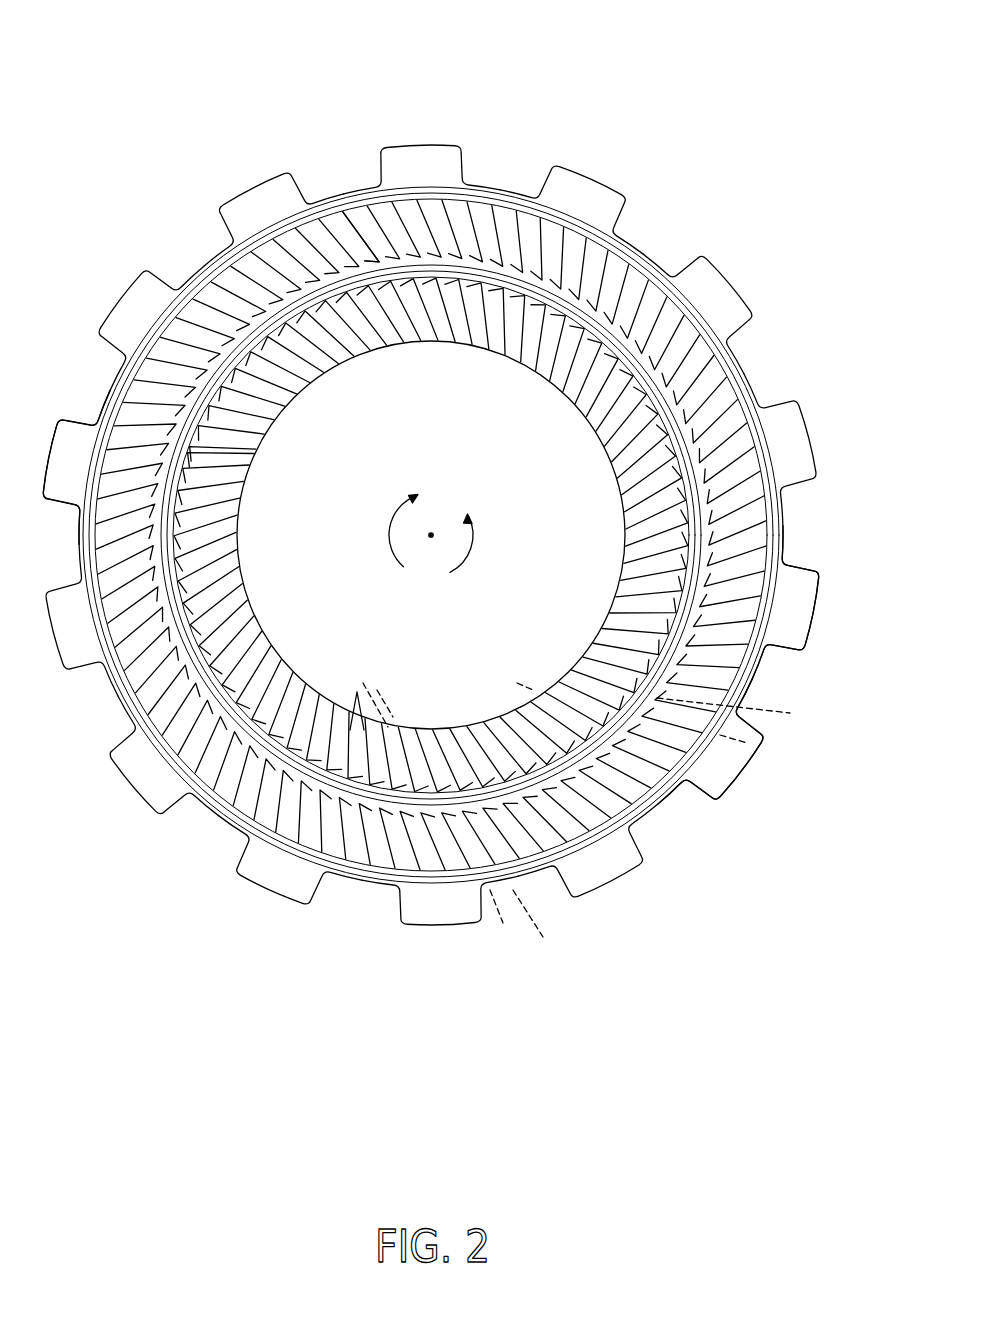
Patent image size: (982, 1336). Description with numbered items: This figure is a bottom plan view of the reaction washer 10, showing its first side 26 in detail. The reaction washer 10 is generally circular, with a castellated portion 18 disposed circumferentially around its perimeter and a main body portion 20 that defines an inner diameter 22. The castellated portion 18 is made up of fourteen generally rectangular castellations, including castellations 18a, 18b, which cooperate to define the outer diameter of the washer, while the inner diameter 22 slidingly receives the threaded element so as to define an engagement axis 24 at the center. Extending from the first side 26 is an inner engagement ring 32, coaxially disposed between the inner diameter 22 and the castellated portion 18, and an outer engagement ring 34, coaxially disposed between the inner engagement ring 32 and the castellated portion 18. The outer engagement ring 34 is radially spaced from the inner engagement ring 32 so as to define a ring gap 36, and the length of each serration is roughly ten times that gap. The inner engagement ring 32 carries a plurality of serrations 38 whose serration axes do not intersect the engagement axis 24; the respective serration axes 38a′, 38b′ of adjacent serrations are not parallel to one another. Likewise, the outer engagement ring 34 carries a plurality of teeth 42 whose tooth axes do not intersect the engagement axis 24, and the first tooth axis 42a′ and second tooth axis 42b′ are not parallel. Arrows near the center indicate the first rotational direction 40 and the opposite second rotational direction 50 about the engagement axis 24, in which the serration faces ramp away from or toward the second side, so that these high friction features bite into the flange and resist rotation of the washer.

The reaction washer 10 is at (142, 63).
The castellated portion 18 is at (613, 131).
The castellation 18a is at (723, 775).
The castellation 18b is at (797, 603).
The main body portion 20 is at (727, 380).
The inner diameter 22 is at (338, 790).
The engagement axis 24 is at (435, 513).
The first side 26 is at (502, 220).
The inner engagement ring 32 is at (397, 303).
The outer engagement ring 34 is at (335, 222).
The ring gap 36 is at (280, 770).
The serrations 38 is at (263, 461).
The first rotational direction 40 is at (388, 537).
The teeth 42 is at (170, 269).
The second rotational direction 50 is at (470, 555).
The serration axis 38a′ is at (543, 688).
The serration axis 38b′ is at (733, 742).
The first tooth axis 42a′ is at (527, 908).
The second tooth axis 42b′ is at (500, 923).